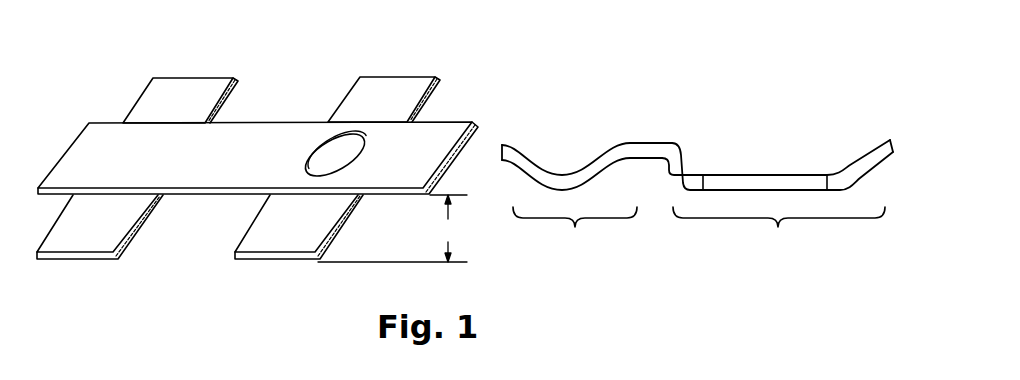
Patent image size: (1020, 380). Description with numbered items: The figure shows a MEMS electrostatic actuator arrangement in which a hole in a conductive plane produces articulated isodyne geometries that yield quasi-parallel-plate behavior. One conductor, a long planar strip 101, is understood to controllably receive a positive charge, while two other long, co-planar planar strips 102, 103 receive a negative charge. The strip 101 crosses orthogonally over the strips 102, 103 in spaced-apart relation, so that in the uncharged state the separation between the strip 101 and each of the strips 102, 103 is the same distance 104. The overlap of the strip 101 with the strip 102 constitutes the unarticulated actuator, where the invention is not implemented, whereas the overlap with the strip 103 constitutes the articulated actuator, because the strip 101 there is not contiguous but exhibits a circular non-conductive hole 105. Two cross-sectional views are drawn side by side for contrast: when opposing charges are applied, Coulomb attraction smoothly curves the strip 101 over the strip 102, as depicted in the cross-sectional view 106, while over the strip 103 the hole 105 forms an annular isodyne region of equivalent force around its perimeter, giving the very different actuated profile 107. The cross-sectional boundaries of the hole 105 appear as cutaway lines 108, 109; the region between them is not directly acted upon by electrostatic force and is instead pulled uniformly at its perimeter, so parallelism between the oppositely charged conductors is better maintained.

The long planar strip conductor 101 is at (78, 137).
The negatively charged planar strip conductor 102 is at (99, 263).
The negatively charged planar strip conductor 103 is at (267, 259).
The separation distance 104 is at (392, 228).
The non-conductive hole 105 is at (332, 150).
The unarticulated cross-sectional view 106 is at (587, 202).
The articulated actuated profile 107 is at (777, 200).
The cutaway line 108 is at (702, 174).
The cutaway line 109 is at (828, 174).